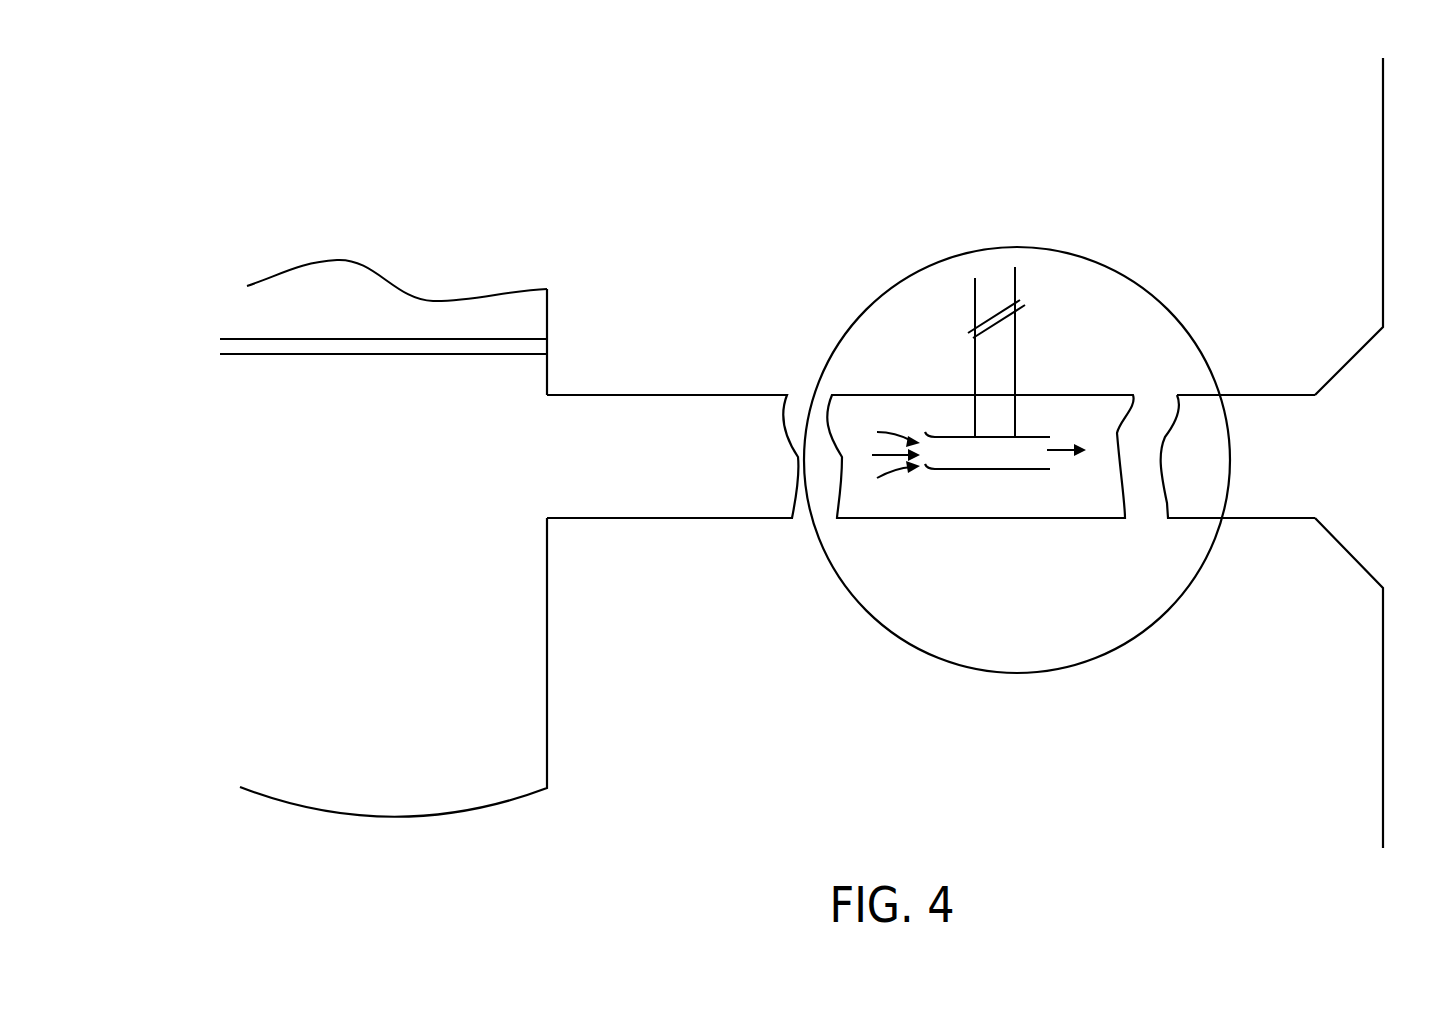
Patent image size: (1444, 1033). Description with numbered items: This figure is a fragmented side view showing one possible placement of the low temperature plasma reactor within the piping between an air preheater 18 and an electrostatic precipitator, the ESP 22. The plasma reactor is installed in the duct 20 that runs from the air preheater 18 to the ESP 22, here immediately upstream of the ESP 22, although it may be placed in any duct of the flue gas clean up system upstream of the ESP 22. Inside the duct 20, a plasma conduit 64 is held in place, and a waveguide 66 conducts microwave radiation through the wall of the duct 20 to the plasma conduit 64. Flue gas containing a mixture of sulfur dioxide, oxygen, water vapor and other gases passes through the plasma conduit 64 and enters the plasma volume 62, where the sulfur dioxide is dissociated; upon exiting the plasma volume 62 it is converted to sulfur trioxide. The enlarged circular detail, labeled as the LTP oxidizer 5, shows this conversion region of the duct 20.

The air preheater 18 is at (547, 367).
The duct 20 is at (724, 395).
The ESP 22 is at (1383, 203).
The low temperature plasma (LTP) oxidizer 5 is at (1185, 593).
The plasma volume 62 is at (975, 453).
The plasma conduit 64 is at (1040, 470).
The waveguide 66 is at (1015, 325).